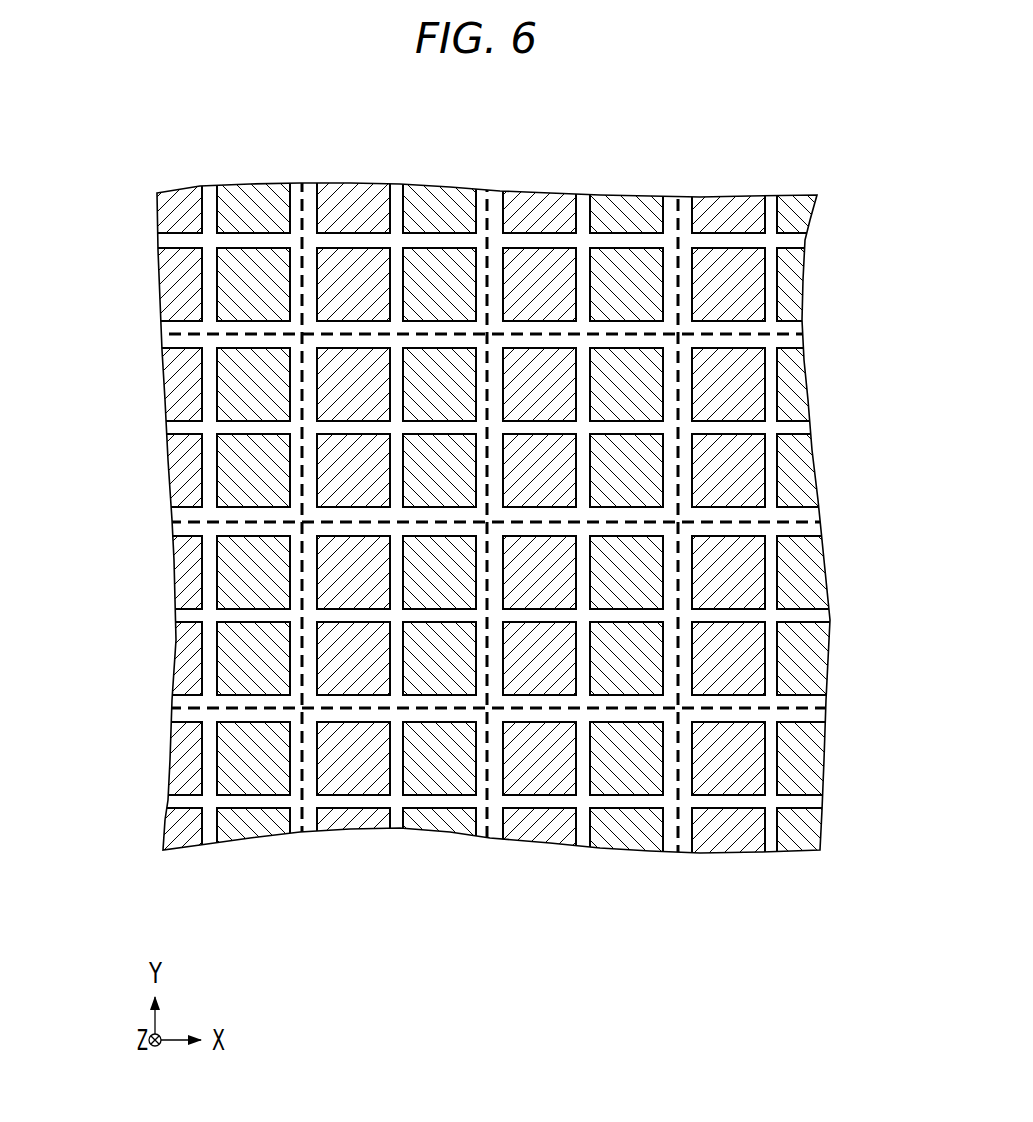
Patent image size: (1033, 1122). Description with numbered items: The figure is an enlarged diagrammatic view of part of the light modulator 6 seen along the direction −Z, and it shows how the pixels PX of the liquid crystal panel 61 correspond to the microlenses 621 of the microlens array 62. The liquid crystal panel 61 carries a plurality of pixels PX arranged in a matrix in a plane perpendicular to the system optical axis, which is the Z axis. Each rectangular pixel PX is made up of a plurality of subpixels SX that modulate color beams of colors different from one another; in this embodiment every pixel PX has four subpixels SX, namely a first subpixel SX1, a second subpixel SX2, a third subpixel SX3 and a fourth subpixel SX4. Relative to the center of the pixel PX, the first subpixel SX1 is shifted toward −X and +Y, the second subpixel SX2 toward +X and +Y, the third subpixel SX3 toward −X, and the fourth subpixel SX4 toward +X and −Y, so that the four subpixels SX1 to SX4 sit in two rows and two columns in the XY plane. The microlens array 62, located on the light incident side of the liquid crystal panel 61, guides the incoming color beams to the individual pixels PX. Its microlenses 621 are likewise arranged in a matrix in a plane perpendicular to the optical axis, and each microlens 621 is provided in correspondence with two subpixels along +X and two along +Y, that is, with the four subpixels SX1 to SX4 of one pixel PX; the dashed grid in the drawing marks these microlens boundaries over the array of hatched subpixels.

The light modulator 6 is at (838, 152).
The liquid crystal panel 61 is at (790, 212).
The microlens array 62 is at (185, 197).
The microlens 621 is at (492, 520).
The pixel PX is at (489, 520).
The subpixel SX is at (489, 520).
The first subpixel SX1 is at (447, 477).
The second subpixel SX2 is at (533, 477).
The third subpixel SX3 is at (447, 564).
The fourth subpixel SX4 is at (533, 564).